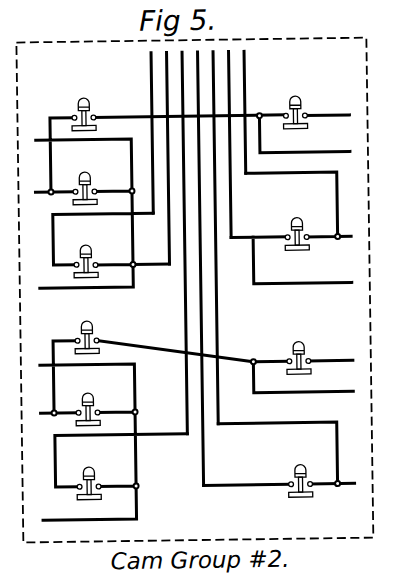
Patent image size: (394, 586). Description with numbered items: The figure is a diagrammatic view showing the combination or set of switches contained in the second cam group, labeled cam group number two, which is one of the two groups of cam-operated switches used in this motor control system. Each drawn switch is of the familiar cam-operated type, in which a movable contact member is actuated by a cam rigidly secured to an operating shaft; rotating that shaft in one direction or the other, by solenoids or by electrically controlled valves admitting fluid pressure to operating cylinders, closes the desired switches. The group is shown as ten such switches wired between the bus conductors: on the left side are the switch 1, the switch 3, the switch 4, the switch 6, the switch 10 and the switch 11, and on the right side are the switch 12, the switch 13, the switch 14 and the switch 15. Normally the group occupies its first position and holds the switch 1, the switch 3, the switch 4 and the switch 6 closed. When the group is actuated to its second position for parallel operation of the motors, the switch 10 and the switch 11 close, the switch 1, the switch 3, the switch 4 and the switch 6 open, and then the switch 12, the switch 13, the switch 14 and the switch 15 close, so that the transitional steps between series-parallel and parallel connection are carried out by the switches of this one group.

The switch 1 is at (92, 335).
The switch 3 is at (92, 112).
The switch 4 is at (92, 259).
The switch 6 is at (92, 481).
The switch 10 is at (92, 407).
The switch 11 is at (92, 186).
The switch 12 is at (303, 358).
The switch 13 is at (303, 234).
The switch 14 is at (303, 113).
The switch 15 is at (303, 481).